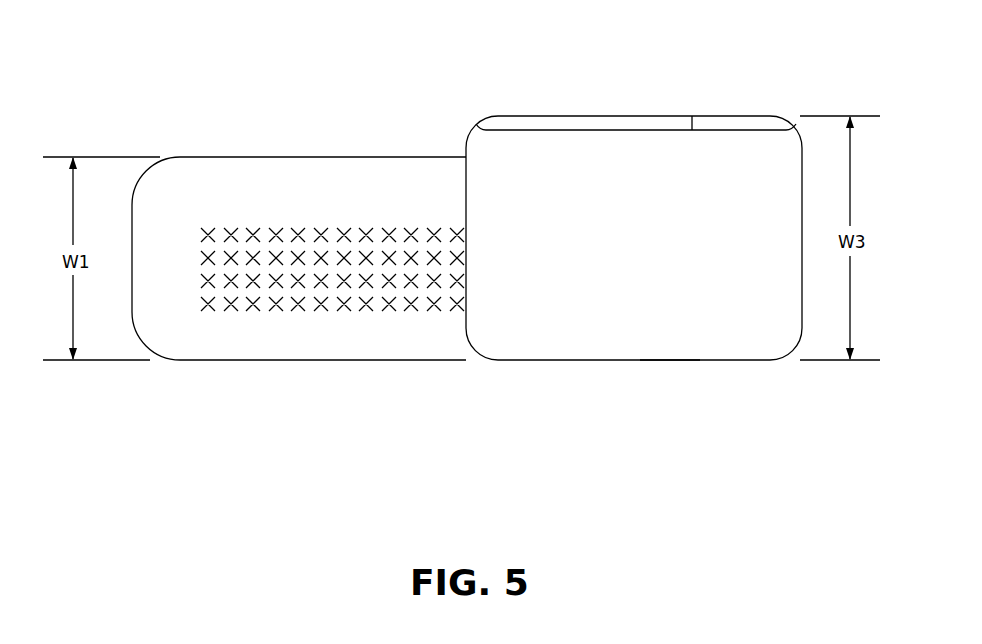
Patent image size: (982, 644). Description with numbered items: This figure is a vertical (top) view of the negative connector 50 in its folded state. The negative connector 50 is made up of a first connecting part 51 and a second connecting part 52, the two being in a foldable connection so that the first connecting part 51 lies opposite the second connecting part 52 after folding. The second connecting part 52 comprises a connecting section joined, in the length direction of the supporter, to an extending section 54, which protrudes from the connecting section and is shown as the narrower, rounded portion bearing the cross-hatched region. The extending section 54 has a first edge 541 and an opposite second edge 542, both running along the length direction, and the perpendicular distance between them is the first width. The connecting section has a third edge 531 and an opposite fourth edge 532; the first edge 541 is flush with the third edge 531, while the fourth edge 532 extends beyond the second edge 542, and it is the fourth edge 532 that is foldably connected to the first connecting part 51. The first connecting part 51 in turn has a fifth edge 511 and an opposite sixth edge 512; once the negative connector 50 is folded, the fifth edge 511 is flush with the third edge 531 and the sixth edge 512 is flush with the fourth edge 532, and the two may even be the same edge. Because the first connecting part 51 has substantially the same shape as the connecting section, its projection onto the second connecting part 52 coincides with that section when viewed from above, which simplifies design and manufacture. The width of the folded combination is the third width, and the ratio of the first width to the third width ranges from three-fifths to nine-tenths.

The negative connector 50 is at (481, 261).
The first connecting part 51 is at (634, 261).
The fifth edge 511 is at (545, 361).
The sixth edge 512 is at (553, 116).
The second connecting part 52 is at (299, 261).
The extending section 54 is at (299, 261).
The first edge 541 is at (227, 361).
The second edge 542 is at (243, 155).
The third edge 531 is at (670, 361).
The fourth edge 532 is at (633, 116).